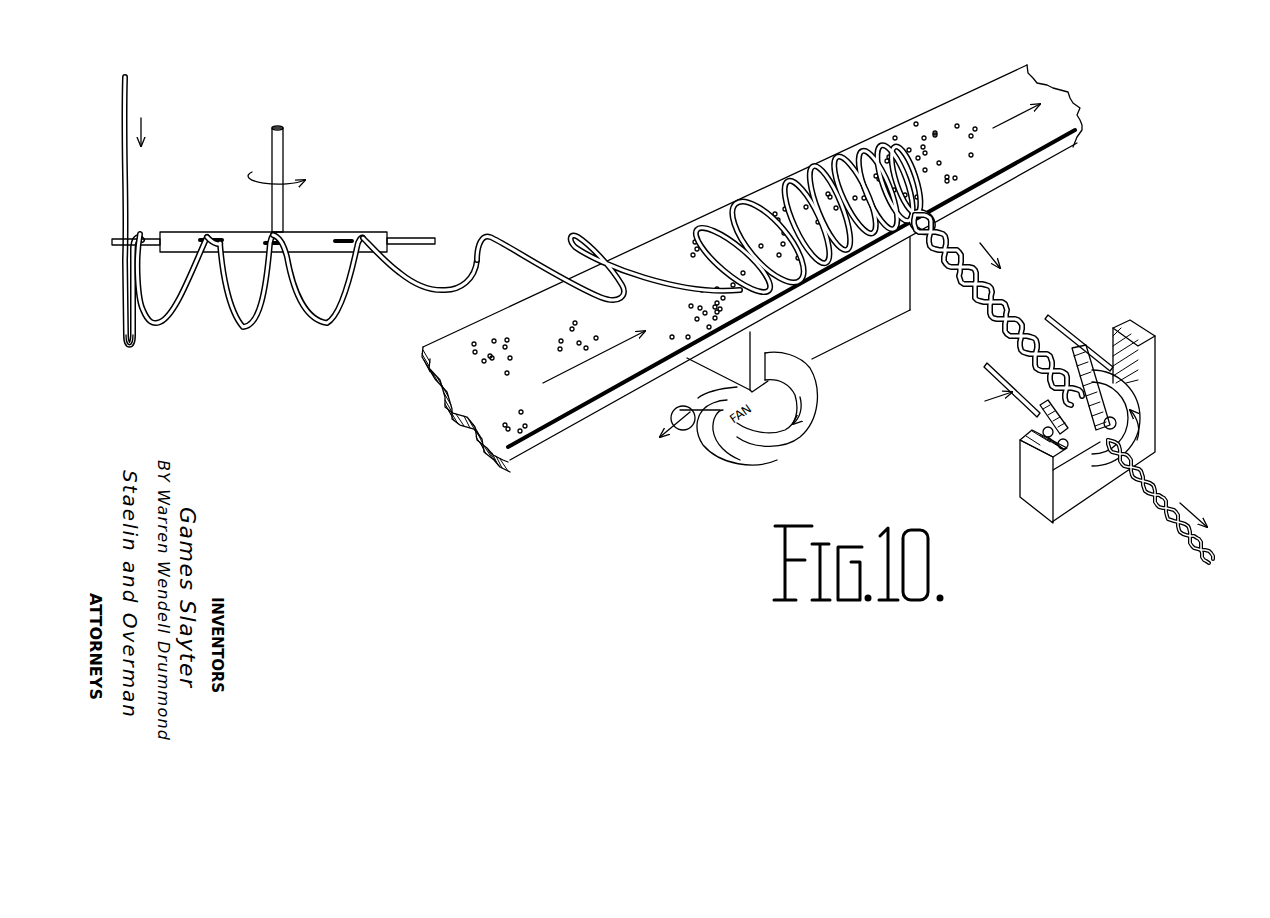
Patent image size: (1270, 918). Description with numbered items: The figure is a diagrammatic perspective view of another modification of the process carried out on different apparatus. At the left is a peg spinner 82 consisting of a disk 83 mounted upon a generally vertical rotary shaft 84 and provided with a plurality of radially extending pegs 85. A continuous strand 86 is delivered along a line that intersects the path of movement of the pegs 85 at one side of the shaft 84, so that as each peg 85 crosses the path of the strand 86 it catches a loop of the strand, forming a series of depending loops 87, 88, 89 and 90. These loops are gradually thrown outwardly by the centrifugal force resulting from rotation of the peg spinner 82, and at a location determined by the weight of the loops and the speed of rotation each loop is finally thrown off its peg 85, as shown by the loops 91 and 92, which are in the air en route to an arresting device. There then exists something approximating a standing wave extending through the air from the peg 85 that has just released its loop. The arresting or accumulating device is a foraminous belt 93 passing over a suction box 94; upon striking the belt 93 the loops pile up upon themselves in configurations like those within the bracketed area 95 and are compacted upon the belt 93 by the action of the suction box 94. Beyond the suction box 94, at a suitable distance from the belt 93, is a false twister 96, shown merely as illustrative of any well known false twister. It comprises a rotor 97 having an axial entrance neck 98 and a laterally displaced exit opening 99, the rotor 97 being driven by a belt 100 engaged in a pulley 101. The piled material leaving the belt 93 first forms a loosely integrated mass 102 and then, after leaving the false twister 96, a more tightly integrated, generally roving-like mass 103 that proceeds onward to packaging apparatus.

The peg spinner 82 is at (283, 189).
The disk 83 is at (333, 230).
The rotary shaft 84 is at (285, 146).
The pegs 85 is at (212, 233).
The continuous strand 86 is at (131, 93).
The depending loop 87 is at (133, 347).
The depending loop 88 is at (160, 327).
The depending loop 89 is at (247, 328).
The depending loop 90 is at (327, 326).
The loop 91 is at (467, 290).
The loop 92 is at (630, 299).
The foraminous belt 93 is at (568, 422).
The suction box 94 is at (857, 333).
The piled loop configurations 95 is at (872, 137).
The false twister 96 is at (1158, 378).
The rotor 97 is at (1137, 430).
The axial entrance neck 98 is at (1035, 392).
The exit opening 99 is at (1082, 485).
The belt 100 is at (988, 364).
The pulley 101 is at (1080, 353).
The loosely integrated mass 102 is at (1017, 287).
The roving-like mass 103 is at (1168, 481).